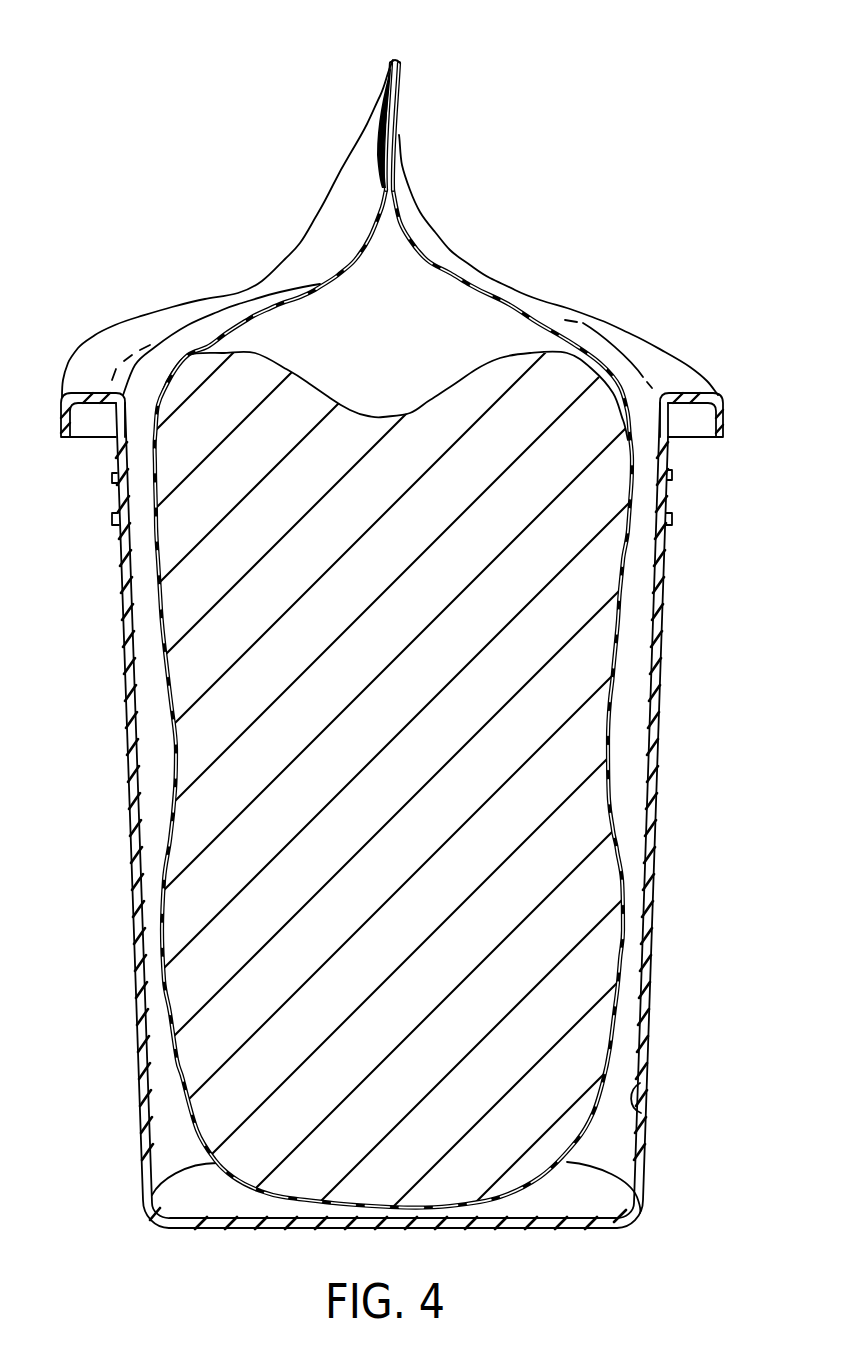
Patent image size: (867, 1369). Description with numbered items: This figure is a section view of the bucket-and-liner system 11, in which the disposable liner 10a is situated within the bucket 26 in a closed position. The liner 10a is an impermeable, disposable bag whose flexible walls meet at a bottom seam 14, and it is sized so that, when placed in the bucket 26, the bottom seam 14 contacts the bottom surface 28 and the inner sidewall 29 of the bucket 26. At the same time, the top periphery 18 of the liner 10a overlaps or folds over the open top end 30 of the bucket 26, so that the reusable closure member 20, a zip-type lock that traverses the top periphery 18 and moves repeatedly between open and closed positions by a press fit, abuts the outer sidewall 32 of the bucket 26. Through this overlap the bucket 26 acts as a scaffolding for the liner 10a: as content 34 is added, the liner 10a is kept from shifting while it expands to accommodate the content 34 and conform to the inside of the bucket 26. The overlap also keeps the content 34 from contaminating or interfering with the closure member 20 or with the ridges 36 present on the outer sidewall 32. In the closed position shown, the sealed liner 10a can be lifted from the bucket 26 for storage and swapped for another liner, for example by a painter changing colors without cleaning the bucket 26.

The disposable liner 10a is at (175, 367).
The bucket-and-liner system 11 is at (230, 250).
The bottom seam 14 is at (533, 1177).
The top periphery 18 is at (395, 58).
The reusable closure member 20 is at (365, 152).
The bucket 26 is at (668, 966).
The bottom surface 28 is at (620, 1203).
The inner sidewall 29 is at (640, 1113).
The open top end 30 is at (687, 393).
The outer sidewall 32 is at (660, 732).
The content 34 is at (317, 835).
The ridges 36 is at (670, 517).